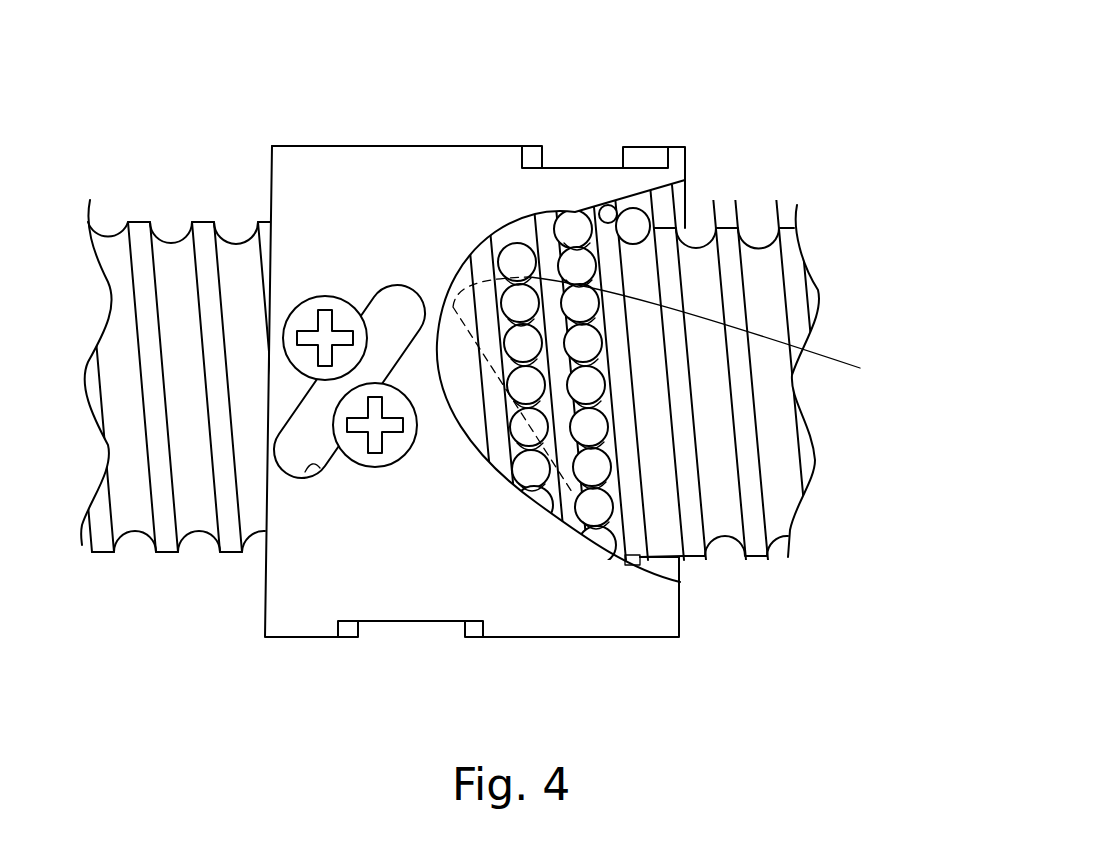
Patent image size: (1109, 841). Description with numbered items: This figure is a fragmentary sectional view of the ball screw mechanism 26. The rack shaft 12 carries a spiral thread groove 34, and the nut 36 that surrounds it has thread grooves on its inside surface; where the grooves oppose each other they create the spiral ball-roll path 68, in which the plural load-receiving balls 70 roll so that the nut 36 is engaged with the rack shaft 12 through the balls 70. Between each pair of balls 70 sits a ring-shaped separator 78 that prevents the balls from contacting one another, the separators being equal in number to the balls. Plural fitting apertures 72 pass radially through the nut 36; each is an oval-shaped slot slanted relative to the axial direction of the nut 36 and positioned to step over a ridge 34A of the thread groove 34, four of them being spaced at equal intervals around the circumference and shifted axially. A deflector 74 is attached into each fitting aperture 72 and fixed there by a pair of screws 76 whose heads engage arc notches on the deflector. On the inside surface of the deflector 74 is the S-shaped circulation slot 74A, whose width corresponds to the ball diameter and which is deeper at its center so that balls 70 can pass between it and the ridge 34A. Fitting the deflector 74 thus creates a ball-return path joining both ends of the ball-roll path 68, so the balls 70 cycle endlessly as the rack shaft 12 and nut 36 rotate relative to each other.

The rack shaft 12 is at (731, 202).
The ball screw mechanism 26 is at (601, 67).
The thread groove 34 is at (530, 277).
The ball-roll path 68 is at (695, 322).
The ridge of the thread groove 34A is at (605, 408).
The nut 36 is at (364, 127).
The ball 70 is at (585, 523).
The fitting aperture 72 is at (618, 163).
The deflector 74 is at (393, 312).
The circulation slot 74A is at (598, 216).
The screw 76 is at (303, 312).
The separator 78 is at (600, 447).